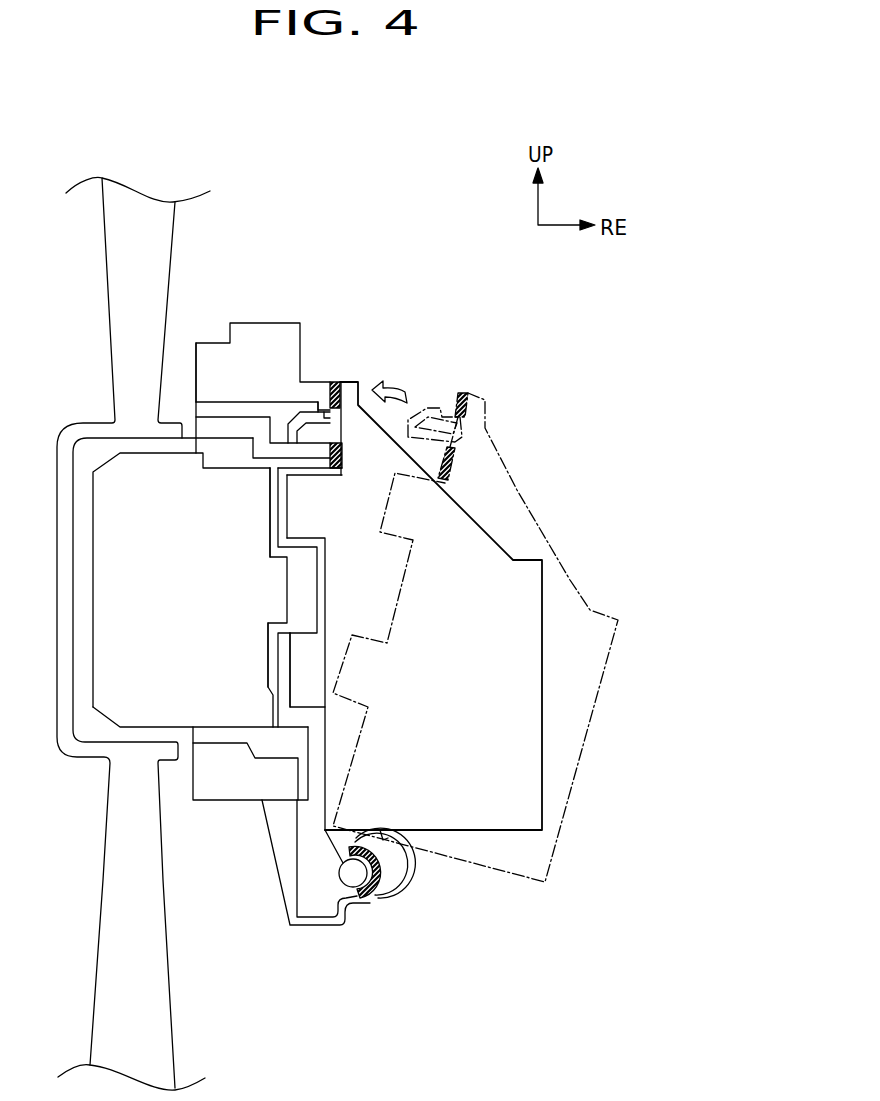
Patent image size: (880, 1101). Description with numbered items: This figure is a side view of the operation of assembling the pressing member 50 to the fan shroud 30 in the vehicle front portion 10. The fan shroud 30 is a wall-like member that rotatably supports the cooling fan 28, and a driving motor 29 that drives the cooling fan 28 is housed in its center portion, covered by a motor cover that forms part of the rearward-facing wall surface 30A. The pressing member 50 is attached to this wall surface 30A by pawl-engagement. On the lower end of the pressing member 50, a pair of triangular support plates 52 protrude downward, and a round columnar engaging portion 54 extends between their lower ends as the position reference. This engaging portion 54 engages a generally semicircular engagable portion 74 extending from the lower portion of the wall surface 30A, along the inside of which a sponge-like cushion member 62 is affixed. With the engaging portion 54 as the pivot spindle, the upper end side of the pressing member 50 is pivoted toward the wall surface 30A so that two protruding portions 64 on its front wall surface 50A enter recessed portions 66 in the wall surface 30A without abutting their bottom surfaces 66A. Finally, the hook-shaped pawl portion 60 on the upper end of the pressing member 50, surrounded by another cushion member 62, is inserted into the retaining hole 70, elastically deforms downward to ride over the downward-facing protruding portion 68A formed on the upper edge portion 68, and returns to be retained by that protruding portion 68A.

The vehicle front portion 10 is at (560, 463).
The cooling fan 28 is at (162, 243).
The driving motor 29 is at (277, 607).
The fan shroud 30 is at (302, 342).
The wall surface 30A is at (310, 750).
The pressing member 50 is at (543, 705).
The wall surface 50A is at (323, 572).
The support plate 52 is at (385, 840).
The engaging portion 54 is at (352, 880).
The pawl portion 60 is at (312, 405).
The cushion member 62 is at (335, 383).
The protruding portion 64 is at (302, 515).
The recessed portion 66 is at (313, 475).
The bottom surface 66A is at (283, 490).
The upper edge portion 68 is at (313, 380).
The protruding portion 68A is at (338, 422).
The retaining hole 70 is at (243, 405).
The engagable portion 74 is at (388, 882).